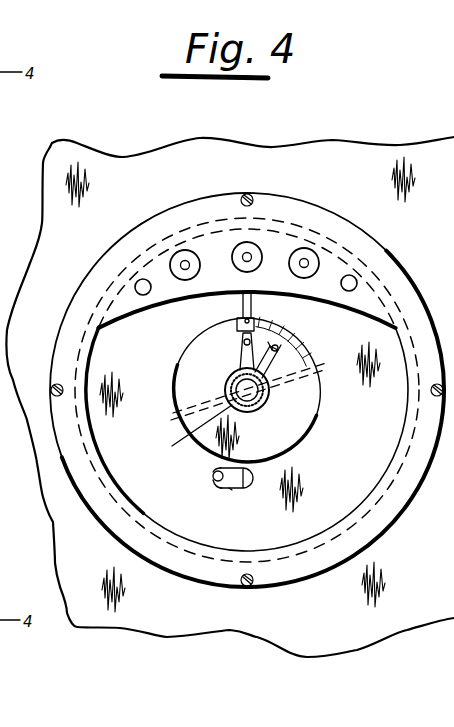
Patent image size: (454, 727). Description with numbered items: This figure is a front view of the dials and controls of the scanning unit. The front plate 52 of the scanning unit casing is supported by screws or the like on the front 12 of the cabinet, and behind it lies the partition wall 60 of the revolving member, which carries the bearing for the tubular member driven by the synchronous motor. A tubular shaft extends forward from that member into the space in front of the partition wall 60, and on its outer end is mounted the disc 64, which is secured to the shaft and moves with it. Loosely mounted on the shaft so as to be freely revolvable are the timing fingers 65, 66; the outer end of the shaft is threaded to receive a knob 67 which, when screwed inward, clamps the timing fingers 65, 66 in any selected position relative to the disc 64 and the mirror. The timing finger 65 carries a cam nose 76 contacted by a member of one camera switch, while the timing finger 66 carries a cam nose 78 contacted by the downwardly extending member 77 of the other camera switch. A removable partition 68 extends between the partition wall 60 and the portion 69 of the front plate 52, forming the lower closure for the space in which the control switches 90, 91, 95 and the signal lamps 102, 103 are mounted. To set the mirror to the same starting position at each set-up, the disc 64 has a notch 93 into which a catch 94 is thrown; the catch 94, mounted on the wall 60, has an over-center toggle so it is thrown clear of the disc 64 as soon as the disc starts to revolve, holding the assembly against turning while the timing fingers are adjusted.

The front of the cabinet 12 is at (47, 220).
The front plate 52 is at (77, 463).
The partition wall 60 is at (160, 512).
The disc 64 is at (307, 418).
The timing finger 65 is at (237, 348).
The timing finger 66 is at (283, 395).
The knob 67 is at (172, 446).
The removable partition 68 is at (352, 312).
The portion of the front plate 69 is at (367, 293).
The cam nose 76 is at (243, 340).
The downwardly extending member 77 is at (252, 313).
The cam nose 78 is at (276, 353).
The control switch 90 is at (180, 250).
The control switch 91 is at (256, 245).
The notch 93 is at (246, 465).
The catch 94 is at (231, 489).
The control switch 95 is at (311, 248).
The signal lamp 102 is at (138, 279).
The signal lamp 103 is at (353, 277).